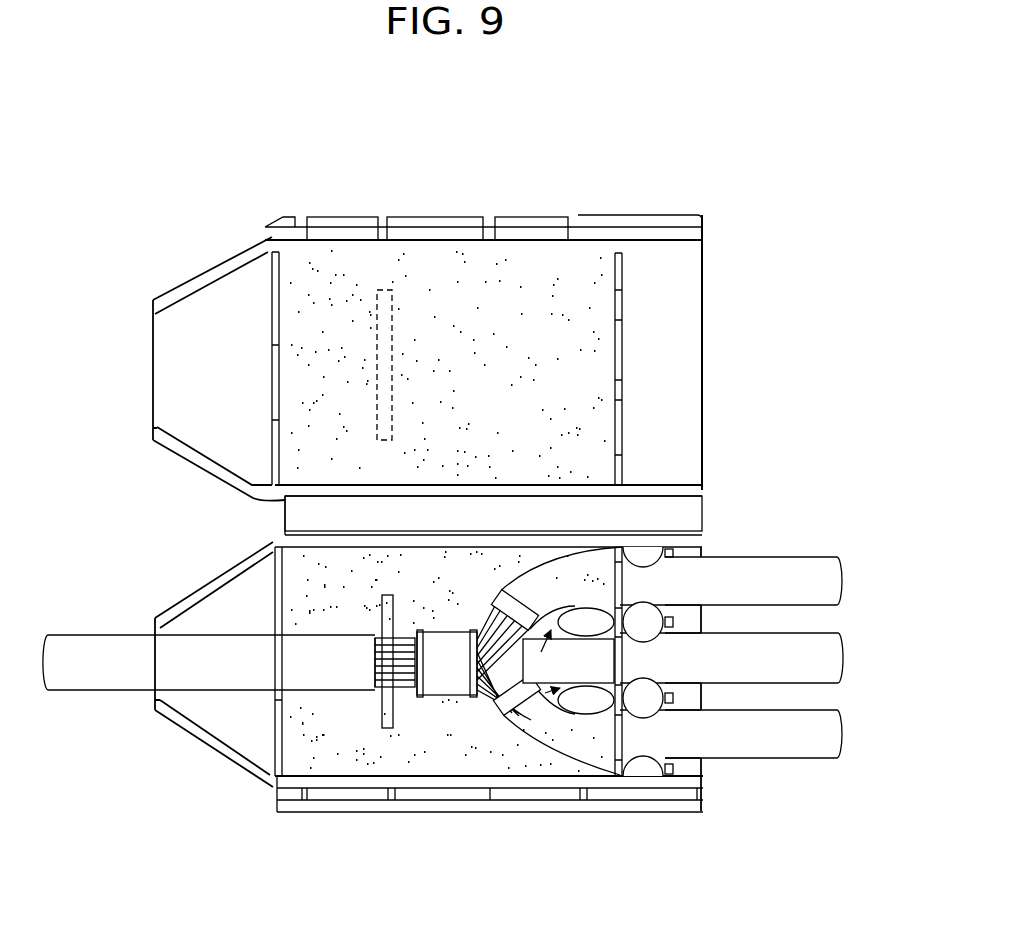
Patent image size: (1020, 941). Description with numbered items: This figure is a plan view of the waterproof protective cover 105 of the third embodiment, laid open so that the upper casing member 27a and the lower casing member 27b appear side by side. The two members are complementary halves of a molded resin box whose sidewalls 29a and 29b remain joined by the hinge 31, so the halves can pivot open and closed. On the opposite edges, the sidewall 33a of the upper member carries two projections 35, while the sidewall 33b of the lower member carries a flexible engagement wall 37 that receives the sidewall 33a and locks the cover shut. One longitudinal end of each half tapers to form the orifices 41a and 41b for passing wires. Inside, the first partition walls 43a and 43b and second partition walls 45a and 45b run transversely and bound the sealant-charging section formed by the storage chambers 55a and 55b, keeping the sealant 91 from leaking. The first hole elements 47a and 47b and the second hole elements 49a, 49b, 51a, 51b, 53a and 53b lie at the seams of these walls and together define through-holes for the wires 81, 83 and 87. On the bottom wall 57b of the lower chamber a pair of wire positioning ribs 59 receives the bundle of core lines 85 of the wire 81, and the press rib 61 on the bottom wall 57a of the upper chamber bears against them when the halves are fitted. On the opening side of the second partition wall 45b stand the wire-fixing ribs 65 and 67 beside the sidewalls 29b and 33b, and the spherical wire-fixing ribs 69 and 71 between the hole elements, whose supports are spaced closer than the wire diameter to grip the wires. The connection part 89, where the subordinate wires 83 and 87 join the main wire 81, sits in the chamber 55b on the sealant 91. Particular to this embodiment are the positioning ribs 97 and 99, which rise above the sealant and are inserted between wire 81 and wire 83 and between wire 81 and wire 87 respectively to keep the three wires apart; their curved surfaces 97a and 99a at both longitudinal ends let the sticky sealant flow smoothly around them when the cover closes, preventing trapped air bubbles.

The waterproof protective cover 105 is at (160, 172).
The upper casing member 27a is at (672, 275).
The lower casing member 27b is at (703, 790).
The sidewall 29a is at (703, 493).
The sidewall 29b is at (692, 540).
The hinge 31 is at (685, 515).
The sidewall 33a is at (700, 225).
The sidewall 33b is at (695, 808).
The projections 35 is at (340, 217).
The flexible engagement wall 37 is at (668, 800).
The orifice 41a is at (168, 333).
The orifice 41b is at (160, 700).
The first partition wall 43a is at (275, 340).
The first partition wall 43b is at (280, 750).
The second partition wall 45a is at (622, 258).
The second partition wall 45b is at (622, 765).
The first hole element 47a is at (270, 338).
The first hole element 47b is at (277, 695).
The second hole element 49a is at (622, 455).
The second hole element 49b is at (620, 606).
The second hole element 51a is at (622, 380).
The second hole element 51b is at (620, 684).
The second hole element 53a is at (622, 316).
The second hole element 53b is at (622, 758).
The storage chamber 55a is at (577, 280).
The storage chamber 55b is at (318, 735).
The bottom wall 57a is at (418, 268).
The bottom wall 57b is at (355, 760).
The wire positioning ribs 59 is at (378, 690).
The press rib 61 is at (380, 290).
The wire-fixing rib 65 is at (645, 545).
The wire-fixing rib 67 is at (645, 772).
The spherical wire-fixing rib 69 is at (615, 640).
The spherical wire-fixing rib 71 is at (615, 720).
The wire 81 is at (90, 640).
The wire 83 is at (815, 585).
The core lines 85 is at (386, 598).
The wire 87 is at (815, 735).
The connection part 89 is at (420, 632).
The sealant 91 is at (293, 440).
The positioning rib 97 is at (555, 572).
The curved surface 97a is at (510, 592).
The positioning rib 99 is at (568, 698).
The curved surface 99a is at (550, 698).